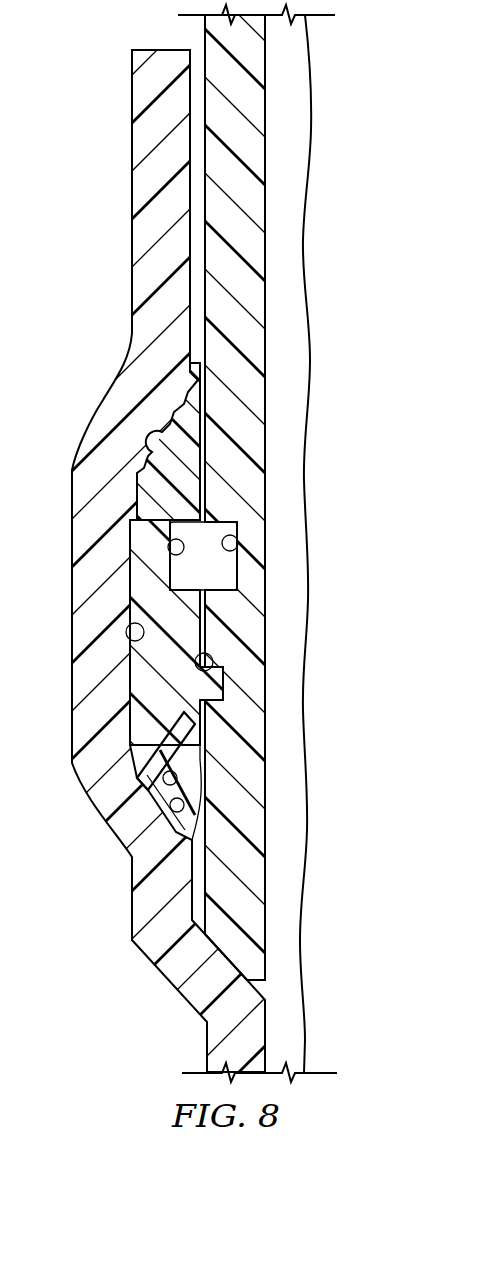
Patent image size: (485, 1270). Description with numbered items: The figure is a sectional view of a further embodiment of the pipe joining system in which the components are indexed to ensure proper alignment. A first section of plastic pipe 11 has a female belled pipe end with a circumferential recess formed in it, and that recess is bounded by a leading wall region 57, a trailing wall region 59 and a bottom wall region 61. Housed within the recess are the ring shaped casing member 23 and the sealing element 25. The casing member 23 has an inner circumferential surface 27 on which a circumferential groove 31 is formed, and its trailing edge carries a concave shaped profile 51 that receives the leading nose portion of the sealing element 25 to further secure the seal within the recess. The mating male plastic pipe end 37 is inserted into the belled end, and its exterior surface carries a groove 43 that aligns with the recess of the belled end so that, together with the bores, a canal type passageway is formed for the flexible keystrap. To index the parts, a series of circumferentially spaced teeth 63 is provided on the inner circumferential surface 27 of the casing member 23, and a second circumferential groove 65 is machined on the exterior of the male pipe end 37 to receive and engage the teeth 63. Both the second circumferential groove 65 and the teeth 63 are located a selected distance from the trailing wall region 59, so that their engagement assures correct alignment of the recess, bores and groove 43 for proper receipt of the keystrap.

The first section of plastic pipe 11 is at (106, 887).
The ring shaped casing member 23 is at (158, 675).
The sealing element 25 is at (140, 774).
The inner circumferential surface 27 is at (211, 593).
The circumferential groove 31 is at (168, 547).
The mating male plastic pipe end 37 is at (248, 293).
The groove 43 is at (238, 544).
The concave shaped profile 51 is at (203, 750).
The leading wall region 57 is at (146, 452).
The trailing wall region 59 is at (187, 827).
The bottom wall region 61 is at (126, 633).
The circumferentially spaced teeth 63 is at (222, 672).
The second circumferential groove 65 is at (212, 656).